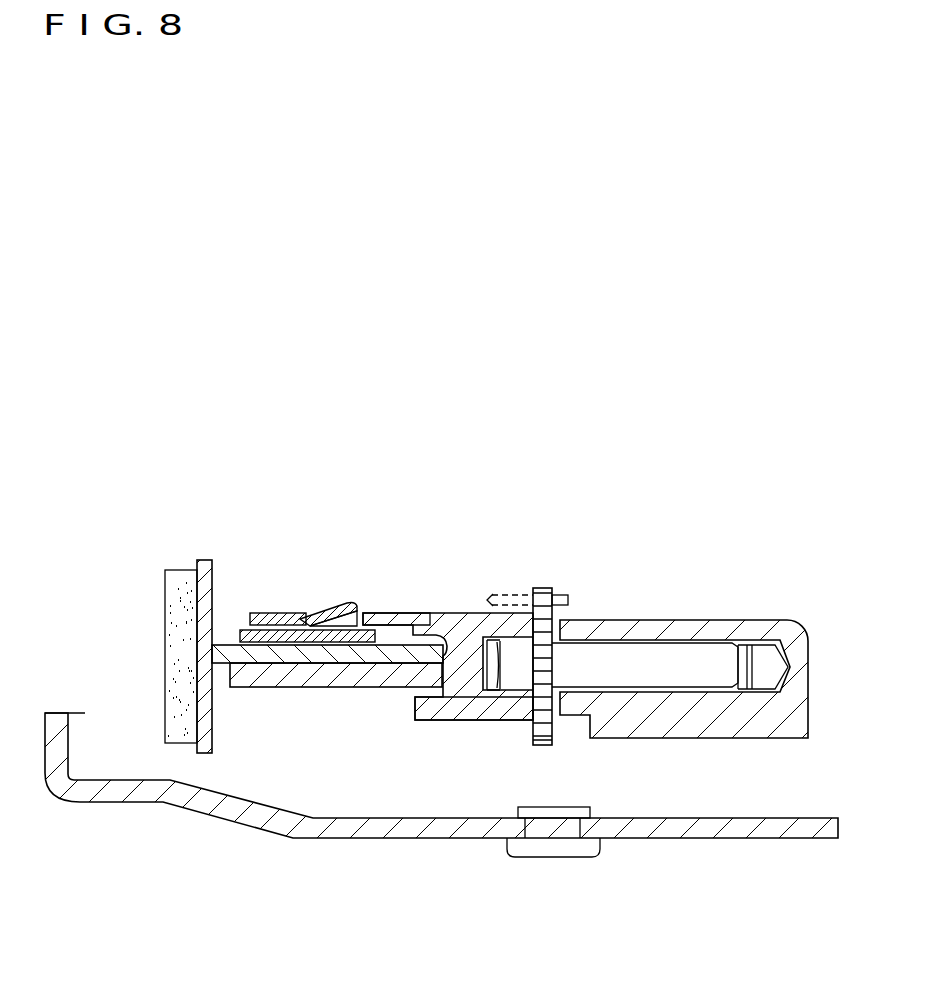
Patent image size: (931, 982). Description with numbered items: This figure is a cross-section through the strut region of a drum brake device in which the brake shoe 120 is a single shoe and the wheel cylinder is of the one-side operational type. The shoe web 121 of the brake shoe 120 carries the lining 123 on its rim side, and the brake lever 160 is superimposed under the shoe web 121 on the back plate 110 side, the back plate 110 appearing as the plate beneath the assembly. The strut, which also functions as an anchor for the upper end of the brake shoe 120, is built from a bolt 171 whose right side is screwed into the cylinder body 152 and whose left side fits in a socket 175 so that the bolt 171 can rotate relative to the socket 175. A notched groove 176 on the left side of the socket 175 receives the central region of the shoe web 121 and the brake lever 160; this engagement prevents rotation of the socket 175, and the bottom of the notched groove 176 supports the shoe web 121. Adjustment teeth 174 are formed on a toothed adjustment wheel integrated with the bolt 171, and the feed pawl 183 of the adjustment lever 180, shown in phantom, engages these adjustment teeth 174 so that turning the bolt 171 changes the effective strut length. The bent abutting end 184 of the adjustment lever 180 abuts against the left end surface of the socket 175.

The back plate 110 is at (673, 838).
The brake shoe 120 is at (259, 583).
The shoe web 121 is at (226, 643).
The lining 123 is at (165, 640).
The cylinder body 152 is at (797, 640).
The brake lever 160 is at (327, 678).
The bolt 171 is at (683, 680).
The adjustment teeth 174 is at (542, 588).
The socket 175 is at (475, 715).
The notched groove 176 is at (448, 651).
The adjustment lever 180 is at (296, 613).
The feed pawl 183 is at (567, 595).
The bent abutting end 184 is at (366, 613).